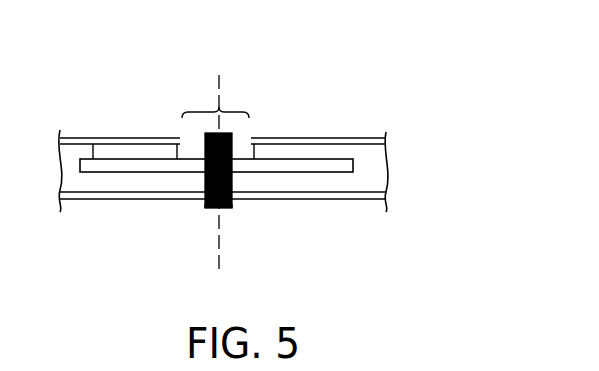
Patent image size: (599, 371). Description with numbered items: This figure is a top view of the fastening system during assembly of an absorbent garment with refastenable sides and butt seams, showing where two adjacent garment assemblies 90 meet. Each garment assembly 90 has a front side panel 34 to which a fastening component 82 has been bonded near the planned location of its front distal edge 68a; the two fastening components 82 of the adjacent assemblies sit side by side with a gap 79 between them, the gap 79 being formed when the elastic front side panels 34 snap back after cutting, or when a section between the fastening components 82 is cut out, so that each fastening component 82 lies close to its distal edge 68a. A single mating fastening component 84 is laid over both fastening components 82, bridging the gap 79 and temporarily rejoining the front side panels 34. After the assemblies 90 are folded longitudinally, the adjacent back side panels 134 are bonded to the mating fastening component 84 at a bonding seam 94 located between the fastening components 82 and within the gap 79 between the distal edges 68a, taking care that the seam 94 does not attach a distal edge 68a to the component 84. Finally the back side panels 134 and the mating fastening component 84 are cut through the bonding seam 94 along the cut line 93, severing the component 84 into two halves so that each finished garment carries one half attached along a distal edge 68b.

The garment assembly 90 is at (100, 111).
The front distal edge 68a is at (180, 138).
The gap 79 is at (220, 106).
The front side panel 34 is at (362, 136).
The fastening component 82 is at (345, 157).
The mating fastening component 84 is at (363, 170).
The back side panel 134 is at (355, 203).
The distal edge 68b is at (205, 207).
The cut line 93 is at (216, 242).
The bonding seam 94 is at (235, 212).